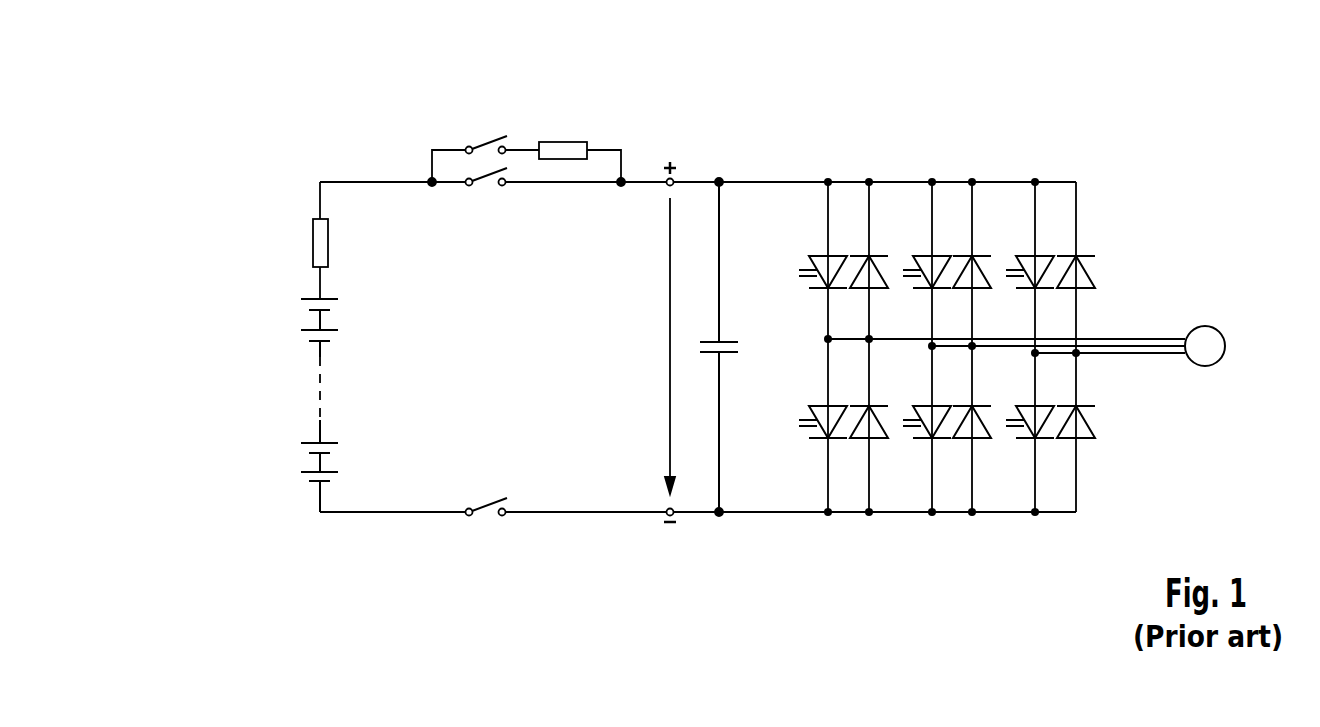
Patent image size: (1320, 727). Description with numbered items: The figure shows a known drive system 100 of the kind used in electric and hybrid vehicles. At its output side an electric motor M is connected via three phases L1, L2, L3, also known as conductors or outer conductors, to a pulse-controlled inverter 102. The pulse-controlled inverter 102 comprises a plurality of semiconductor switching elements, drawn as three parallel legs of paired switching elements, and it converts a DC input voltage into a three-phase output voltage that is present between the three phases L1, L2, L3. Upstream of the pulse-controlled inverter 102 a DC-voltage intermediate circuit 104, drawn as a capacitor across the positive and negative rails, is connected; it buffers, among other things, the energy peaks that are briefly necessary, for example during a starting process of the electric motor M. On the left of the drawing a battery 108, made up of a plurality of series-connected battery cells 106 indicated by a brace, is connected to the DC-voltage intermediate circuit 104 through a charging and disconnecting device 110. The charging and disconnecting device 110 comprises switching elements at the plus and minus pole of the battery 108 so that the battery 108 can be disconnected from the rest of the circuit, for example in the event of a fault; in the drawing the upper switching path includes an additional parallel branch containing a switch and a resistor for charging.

The drive system 100 is at (1023, 82).
The pulse-controlled inverter 102 is at (1095, 540).
The DC-voltage intermediate circuit 104 is at (719, 180).
The battery cells 106 is at (334, 296).
The battery 108 is at (298, 220).
The charging and disconnecting device 110 is at (489, 140).
The phase L1 is at (1092, 338).
The phase L2 is at (1137, 345).
The phase L3 is at (1114, 356).